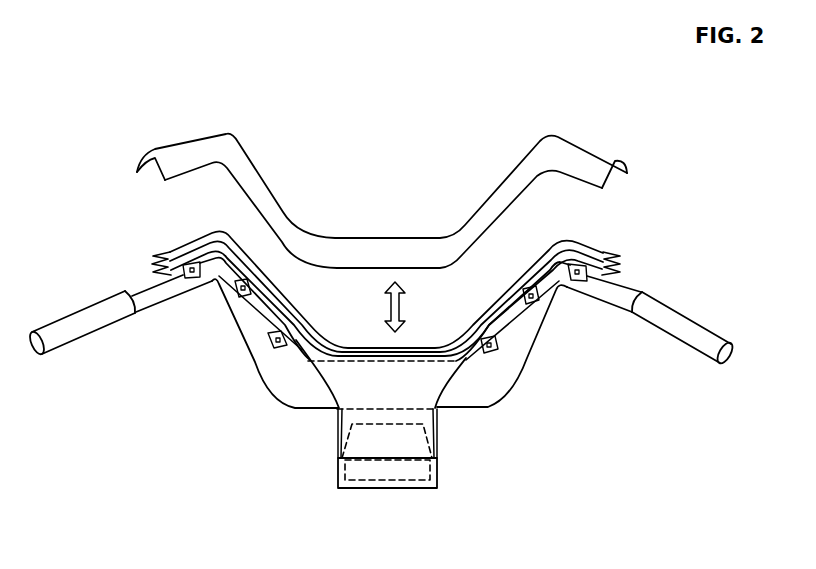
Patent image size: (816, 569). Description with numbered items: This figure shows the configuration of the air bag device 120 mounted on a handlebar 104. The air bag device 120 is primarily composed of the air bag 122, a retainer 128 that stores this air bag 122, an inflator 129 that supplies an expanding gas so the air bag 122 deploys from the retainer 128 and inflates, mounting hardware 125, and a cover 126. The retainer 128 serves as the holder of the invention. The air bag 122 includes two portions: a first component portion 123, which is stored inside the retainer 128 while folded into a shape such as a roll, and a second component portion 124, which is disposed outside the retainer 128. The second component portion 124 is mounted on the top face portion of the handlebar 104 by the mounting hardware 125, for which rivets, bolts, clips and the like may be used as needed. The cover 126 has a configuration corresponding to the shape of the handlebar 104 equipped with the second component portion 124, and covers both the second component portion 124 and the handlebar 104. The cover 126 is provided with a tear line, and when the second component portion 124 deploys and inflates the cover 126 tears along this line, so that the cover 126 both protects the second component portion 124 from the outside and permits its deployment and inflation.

The handlebar 104 is at (147, 289).
The air bag device 120 is at (547, 432).
The air bag 122 is at (225, 452).
The first component portion 123 is at (343, 470).
The second component portion 124 is at (303, 348).
The mounting hardware 125 is at (482, 348).
The cover 126 is at (497, 181).
The retainer 128 is at (442, 480).
The inflator 129 is at (397, 481).